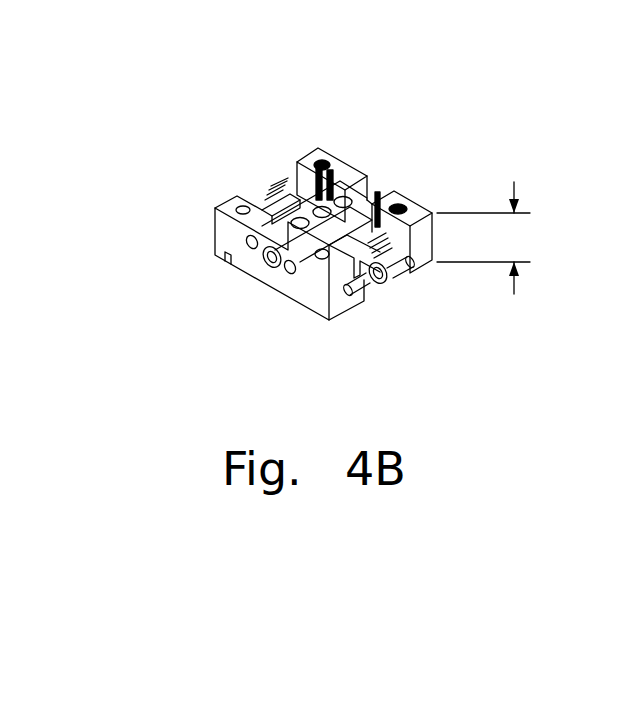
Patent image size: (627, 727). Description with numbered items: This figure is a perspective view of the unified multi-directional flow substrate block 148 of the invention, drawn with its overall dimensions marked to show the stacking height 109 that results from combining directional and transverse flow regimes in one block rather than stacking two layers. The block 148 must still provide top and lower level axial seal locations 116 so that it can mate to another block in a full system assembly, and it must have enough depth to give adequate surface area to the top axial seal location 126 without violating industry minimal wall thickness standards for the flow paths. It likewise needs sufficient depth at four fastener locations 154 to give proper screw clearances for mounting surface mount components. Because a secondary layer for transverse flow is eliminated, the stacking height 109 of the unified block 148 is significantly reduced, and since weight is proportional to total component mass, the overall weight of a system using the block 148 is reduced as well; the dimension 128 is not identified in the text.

The stacking height 109 is at (556, 262).
The axial seal locations 116 is at (285, 278).
The top axial seal location 126 is at (303, 150).
The jaw width dimension 128 is at (62, 255).
The unified multi-directional flow substrate block 148 is at (366, 168).
The fastener locations 154 is at (331, 157).